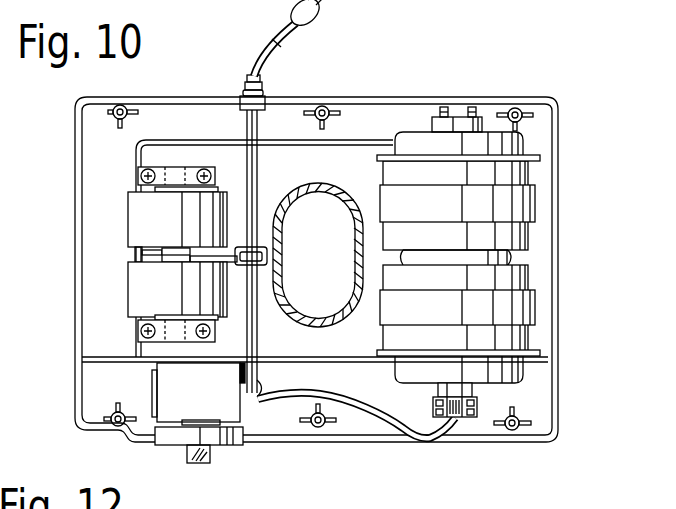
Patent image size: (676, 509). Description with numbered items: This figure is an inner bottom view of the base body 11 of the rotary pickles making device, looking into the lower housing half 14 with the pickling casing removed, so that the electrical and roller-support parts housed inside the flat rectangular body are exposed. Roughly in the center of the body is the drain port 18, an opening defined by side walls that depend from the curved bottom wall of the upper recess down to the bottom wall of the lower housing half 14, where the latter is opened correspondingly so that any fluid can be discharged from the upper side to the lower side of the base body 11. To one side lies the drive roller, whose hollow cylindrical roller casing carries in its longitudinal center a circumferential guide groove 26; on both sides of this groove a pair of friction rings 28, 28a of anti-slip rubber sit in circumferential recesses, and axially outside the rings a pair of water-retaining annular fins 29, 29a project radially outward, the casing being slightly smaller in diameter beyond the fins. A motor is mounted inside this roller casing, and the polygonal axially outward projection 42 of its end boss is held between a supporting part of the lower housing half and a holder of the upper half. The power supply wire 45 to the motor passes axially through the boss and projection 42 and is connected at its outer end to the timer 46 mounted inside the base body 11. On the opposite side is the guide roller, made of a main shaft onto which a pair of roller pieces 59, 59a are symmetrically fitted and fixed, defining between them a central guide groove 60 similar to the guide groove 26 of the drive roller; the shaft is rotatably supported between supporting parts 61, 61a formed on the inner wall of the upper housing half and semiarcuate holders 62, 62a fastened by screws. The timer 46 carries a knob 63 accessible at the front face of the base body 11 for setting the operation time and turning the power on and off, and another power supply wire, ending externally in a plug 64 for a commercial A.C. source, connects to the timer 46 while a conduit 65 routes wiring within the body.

The base body 11 is at (343, 246).
The lower housing half 14 is at (556, 107).
The drain port 18 is at (323, 205).
The circumferential guide groove 26 is at (520, 258).
The friction ring 28 is at (530, 312).
The friction ring 28a is at (537, 205).
The water-retaining annular fin 29 is at (540, 357).
The water-retaining annular fin 29a is at (540, 158).
The axially outward projection 42 is at (454, 419).
The power supply wire 45 is at (423, 431).
The timer 46 is at (227, 410).
The roller piece 59 is at (146, 283).
The roller piece 59a is at (137, 213).
The central guide groove 60 is at (147, 253).
The supporting part 61 is at (152, 342).
The supporting part 61a is at (162, 167).
The semiarcuate holder 62 is at (177, 336).
The semiarcuate holder 62a is at (180, 167).
The knob 63 is at (200, 463).
The plug 64 is at (318, 21).
The conduit 65 is at (250, 330).